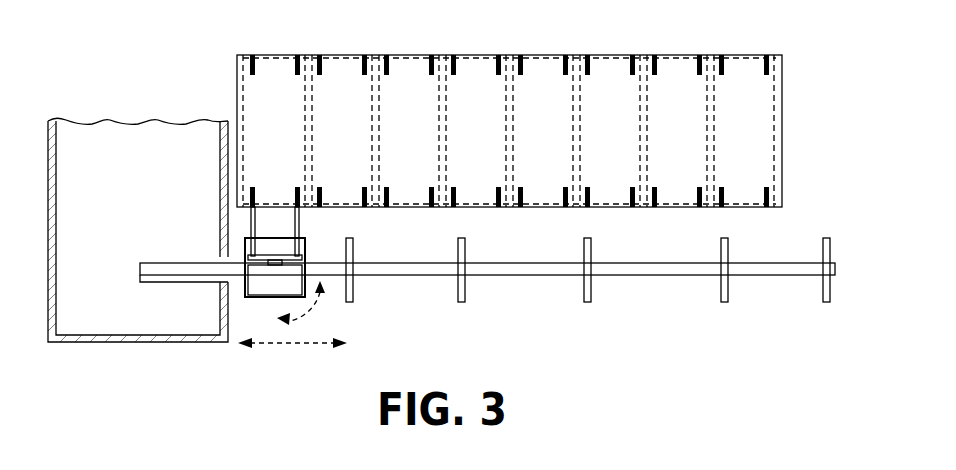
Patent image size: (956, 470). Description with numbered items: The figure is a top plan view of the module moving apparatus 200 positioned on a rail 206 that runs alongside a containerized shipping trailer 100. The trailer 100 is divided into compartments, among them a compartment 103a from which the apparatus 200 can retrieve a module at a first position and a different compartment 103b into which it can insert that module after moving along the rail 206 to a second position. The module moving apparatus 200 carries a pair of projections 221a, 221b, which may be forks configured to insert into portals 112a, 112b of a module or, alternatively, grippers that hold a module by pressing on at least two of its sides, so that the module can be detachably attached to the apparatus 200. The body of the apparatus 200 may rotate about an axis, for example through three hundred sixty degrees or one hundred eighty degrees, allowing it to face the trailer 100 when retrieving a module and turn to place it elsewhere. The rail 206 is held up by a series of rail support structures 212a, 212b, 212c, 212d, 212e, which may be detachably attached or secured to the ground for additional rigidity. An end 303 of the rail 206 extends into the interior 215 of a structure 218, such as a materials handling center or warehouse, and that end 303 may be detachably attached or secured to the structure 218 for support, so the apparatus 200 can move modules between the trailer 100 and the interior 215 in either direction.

The containerized shipping trailer 100 is at (711, 55).
The compartment 103a is at (292, 150).
The compartment 103b is at (695, 150).
The portal 112a is at (250, 193).
The portal 112b is at (301, 193).
The projection 221a is at (250, 228).
The projection 221b is at (300, 228).
The module moving apparatus 200 is at (288, 287).
The rail 206 is at (547, 276).
The rail support structure 212a is at (354, 293).
The rail support structure 212b is at (466, 293).
The rail support structure 212c is at (592, 293).
The rail support structure 212d is at (729, 293).
The rail support structure 212e is at (829, 302).
The interior 215 is at (180, 160).
The structure 218 is at (185, 399).
The end of the rail 303 is at (143, 259).